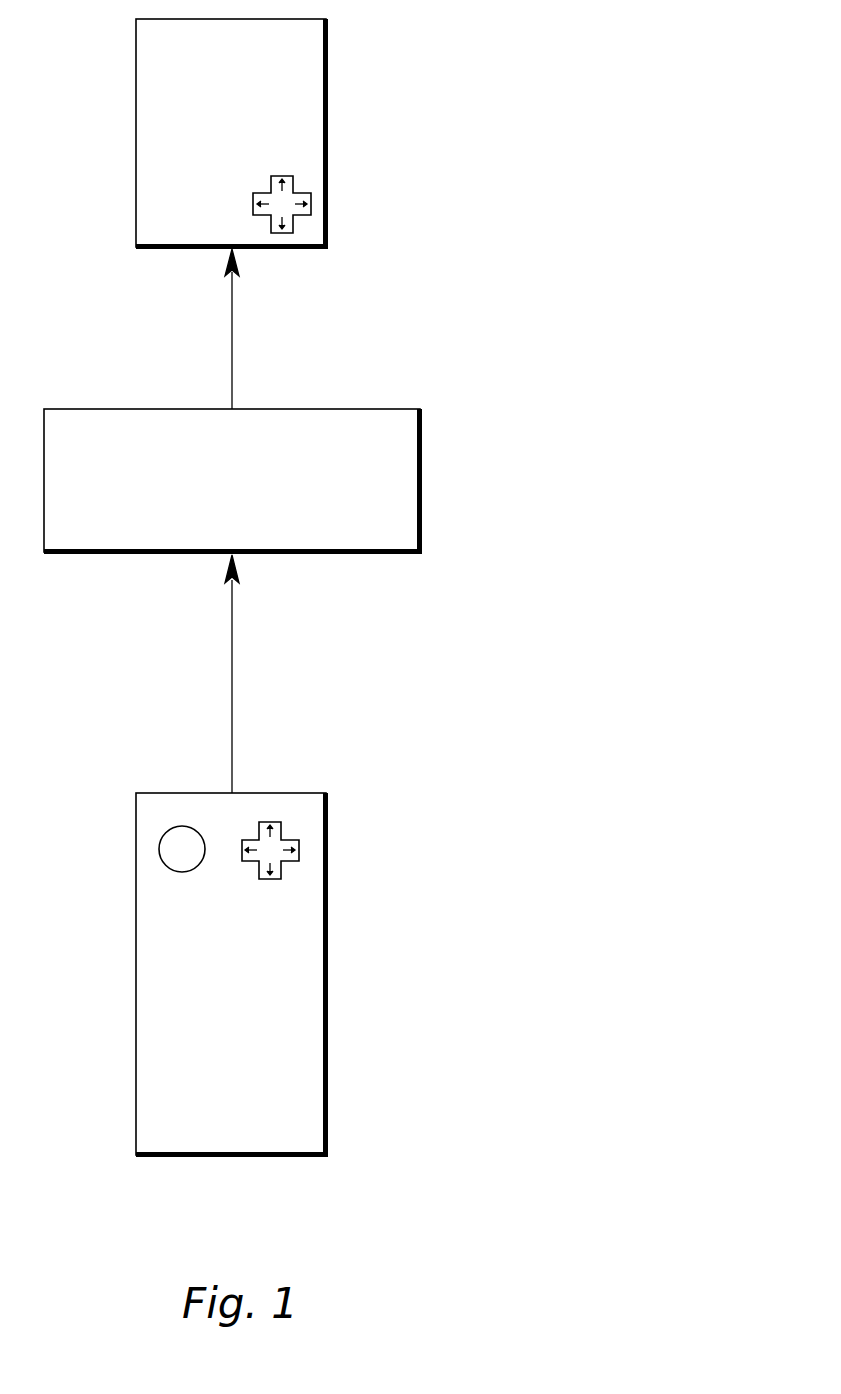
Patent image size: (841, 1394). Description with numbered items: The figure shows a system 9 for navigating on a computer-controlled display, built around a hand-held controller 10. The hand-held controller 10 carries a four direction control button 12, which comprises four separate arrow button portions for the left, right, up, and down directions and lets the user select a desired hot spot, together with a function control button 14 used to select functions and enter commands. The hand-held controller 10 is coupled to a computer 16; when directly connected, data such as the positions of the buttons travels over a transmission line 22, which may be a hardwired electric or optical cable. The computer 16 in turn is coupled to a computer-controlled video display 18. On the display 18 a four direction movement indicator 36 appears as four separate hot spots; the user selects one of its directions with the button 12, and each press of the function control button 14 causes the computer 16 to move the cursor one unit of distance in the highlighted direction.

The system 9 is at (580, 1010).
The hand-held controller 10 is at (328, 998).
The four direction control button 12 is at (284, 834).
The function control button 14 is at (159, 849).
The computer 16 is at (422, 478).
The computer-controlled video display 18 is at (328, 165).
The transmission line 22 is at (232, 696).
The four direction movement indicator 36 is at (311, 209).